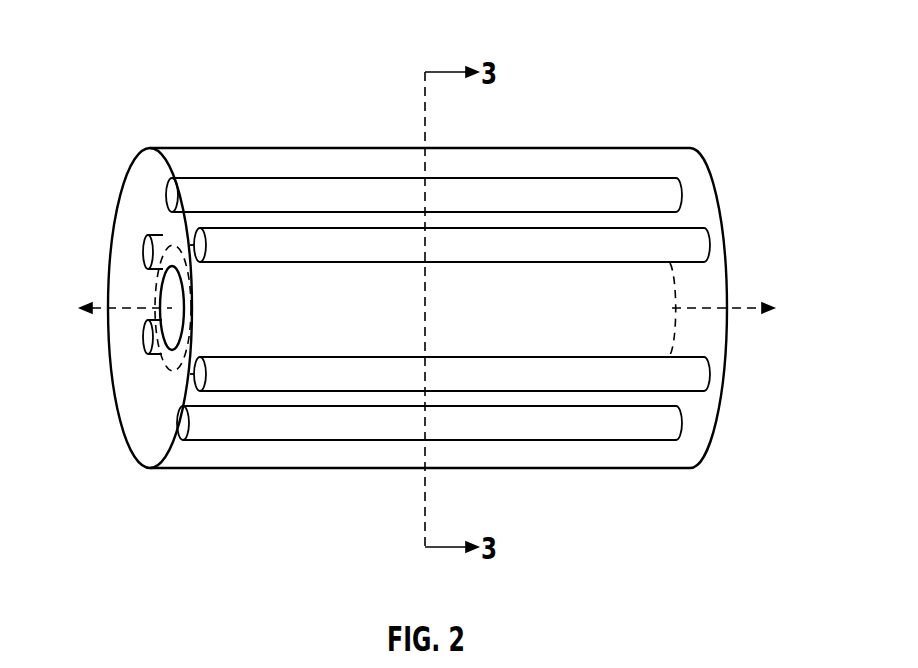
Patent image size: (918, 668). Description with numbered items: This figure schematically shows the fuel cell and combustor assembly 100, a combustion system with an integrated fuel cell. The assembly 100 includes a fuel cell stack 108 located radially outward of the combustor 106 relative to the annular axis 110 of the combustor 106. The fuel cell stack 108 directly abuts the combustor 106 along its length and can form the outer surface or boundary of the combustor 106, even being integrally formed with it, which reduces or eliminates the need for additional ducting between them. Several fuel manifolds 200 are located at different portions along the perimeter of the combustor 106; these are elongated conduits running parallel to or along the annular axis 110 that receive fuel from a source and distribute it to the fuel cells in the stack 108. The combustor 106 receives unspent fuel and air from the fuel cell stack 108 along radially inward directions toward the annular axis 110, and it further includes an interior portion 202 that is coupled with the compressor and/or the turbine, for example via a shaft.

The fuel cell and combustor assembly 100 is at (728, 58).
The combustor 106 is at (170, 262).
The fuel cell stack 108 is at (322, 468).
The annular axis 110 is at (741, 306).
The fuel manifolds 200 is at (345, 190).
The interior portion 202 is at (168, 328).